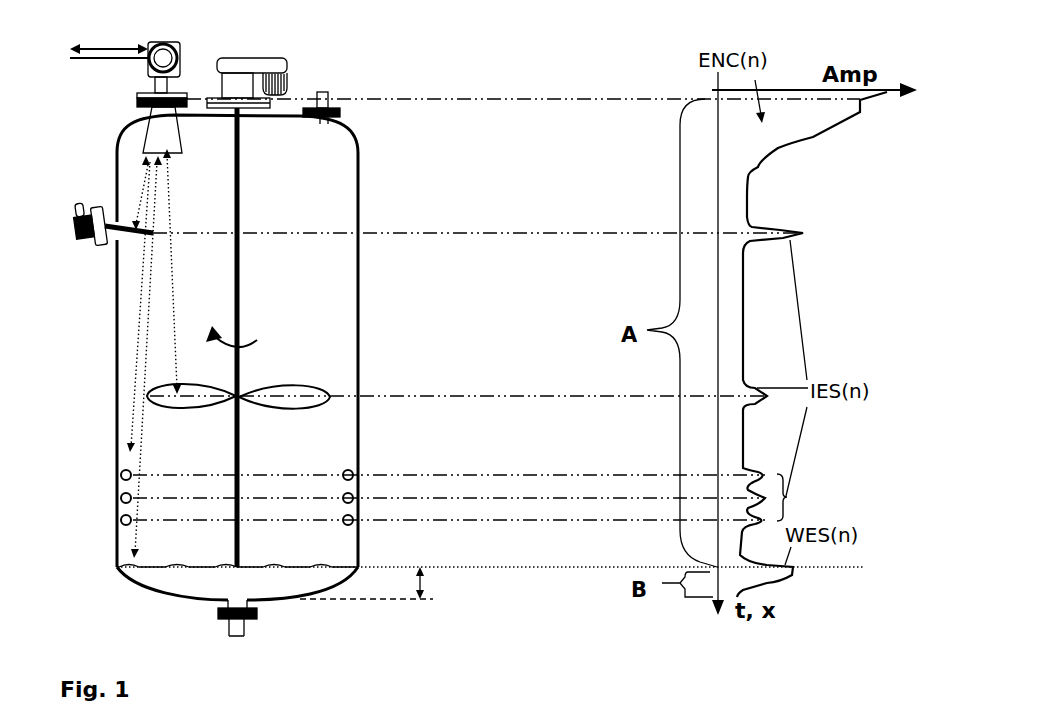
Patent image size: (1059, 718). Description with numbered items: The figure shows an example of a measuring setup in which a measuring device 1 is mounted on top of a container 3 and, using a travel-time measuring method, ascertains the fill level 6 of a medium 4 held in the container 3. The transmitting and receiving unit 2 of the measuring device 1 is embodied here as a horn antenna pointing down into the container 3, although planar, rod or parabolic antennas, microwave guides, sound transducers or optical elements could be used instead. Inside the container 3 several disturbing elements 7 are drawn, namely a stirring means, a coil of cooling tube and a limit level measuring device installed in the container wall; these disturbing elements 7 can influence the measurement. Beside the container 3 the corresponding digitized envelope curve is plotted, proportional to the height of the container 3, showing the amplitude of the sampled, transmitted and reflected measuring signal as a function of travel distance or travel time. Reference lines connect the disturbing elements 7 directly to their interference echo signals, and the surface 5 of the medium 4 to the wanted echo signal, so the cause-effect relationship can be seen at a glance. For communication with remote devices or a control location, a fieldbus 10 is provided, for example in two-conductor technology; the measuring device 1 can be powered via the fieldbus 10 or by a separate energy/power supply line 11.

The measuring device 1 is at (165, 57).
The transmitting and receiving unit 2 is at (152, 135).
The container 3 is at (115, 190).
The medium 4 is at (273, 578).
The surface 5 is at (334, 560).
The fill level 6 is at (374, 583).
The disturbing elements 7 is at (121, 516).
The fieldbus 10 is at (80, 47).
The energy/power supply line 11 is at (72, 60).